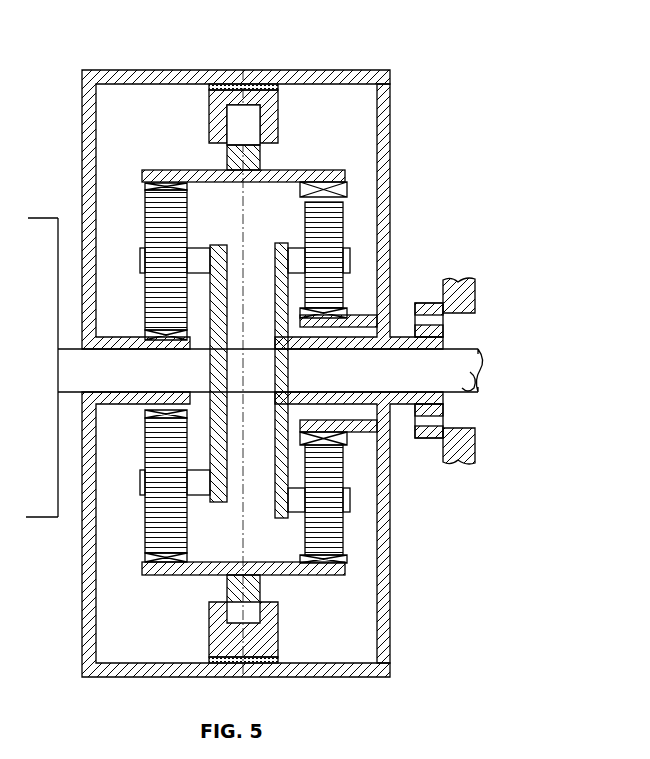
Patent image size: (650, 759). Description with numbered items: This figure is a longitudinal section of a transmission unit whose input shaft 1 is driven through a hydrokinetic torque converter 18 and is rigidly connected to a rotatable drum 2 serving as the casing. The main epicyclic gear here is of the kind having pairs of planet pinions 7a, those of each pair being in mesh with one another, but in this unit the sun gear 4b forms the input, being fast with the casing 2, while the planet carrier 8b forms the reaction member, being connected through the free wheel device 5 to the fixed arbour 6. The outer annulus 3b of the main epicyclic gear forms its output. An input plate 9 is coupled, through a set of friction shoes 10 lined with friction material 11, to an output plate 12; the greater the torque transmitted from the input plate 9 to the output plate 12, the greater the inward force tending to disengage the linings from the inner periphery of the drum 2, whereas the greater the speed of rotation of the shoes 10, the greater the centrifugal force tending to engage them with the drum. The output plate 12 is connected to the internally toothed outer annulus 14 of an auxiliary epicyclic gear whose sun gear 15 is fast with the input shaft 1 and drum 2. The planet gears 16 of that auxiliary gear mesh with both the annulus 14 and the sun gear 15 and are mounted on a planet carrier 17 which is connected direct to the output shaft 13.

The input shaft 1 is at (65, 350).
The rotatable drum 2 is at (312, 82).
The outer annulus 3b is at (347, 190).
The sun gear 4b is at (348, 437).
The free wheel 5 is at (430, 328).
The fixed arbour 6 is at (467, 298).
The planet pinions 7a is at (345, 222).
The planet carrier 8b is at (294, 258).
The input plate 9 is at (262, 162).
The friction shoes 10 is at (279, 104).
The friction material 11 is at (226, 86).
The output plate 12 is at (228, 163).
The output shaft 13 is at (452, 386).
The internally toothed outer annulus 14 is at (143, 185).
The sun gear 15 is at (143, 333).
The planet gears 16 is at (147, 208).
The planet carrier 17 is at (212, 498).
The hydrokinetic torque converter 18 is at (42, 232).